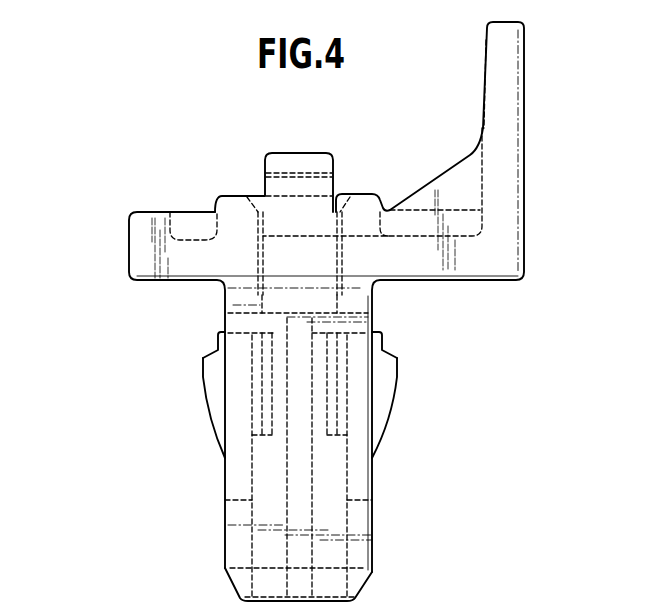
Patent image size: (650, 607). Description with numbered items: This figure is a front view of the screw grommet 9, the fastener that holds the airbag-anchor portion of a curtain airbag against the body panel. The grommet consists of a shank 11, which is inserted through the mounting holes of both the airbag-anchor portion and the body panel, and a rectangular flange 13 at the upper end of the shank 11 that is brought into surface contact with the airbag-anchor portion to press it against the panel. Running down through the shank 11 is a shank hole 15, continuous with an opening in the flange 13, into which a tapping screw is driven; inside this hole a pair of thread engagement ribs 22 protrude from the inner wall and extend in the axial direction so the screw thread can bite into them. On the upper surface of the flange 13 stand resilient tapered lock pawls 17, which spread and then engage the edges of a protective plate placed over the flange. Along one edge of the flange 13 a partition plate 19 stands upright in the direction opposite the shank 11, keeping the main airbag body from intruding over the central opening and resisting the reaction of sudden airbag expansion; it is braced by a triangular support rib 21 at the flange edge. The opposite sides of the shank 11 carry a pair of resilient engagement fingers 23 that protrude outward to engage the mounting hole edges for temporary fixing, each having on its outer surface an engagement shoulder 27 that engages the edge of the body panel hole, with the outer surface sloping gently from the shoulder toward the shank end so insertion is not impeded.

The screw grommet 9 is at (128, 171).
The shank 11 is at (225, 528).
The flange 13 is at (140, 263).
The shank hole 15 is at (273, 547).
The resilient tapered lock pawl 17 is at (335, 149).
The partition plate 19 is at (512, 88).
The triangular support rib 21 is at (463, 158).
The thread engagement rib 22 is at (315, 552).
The resilient engagement finger 23 is at (203, 388).
The engagement shoulder 27 is at (215, 352).